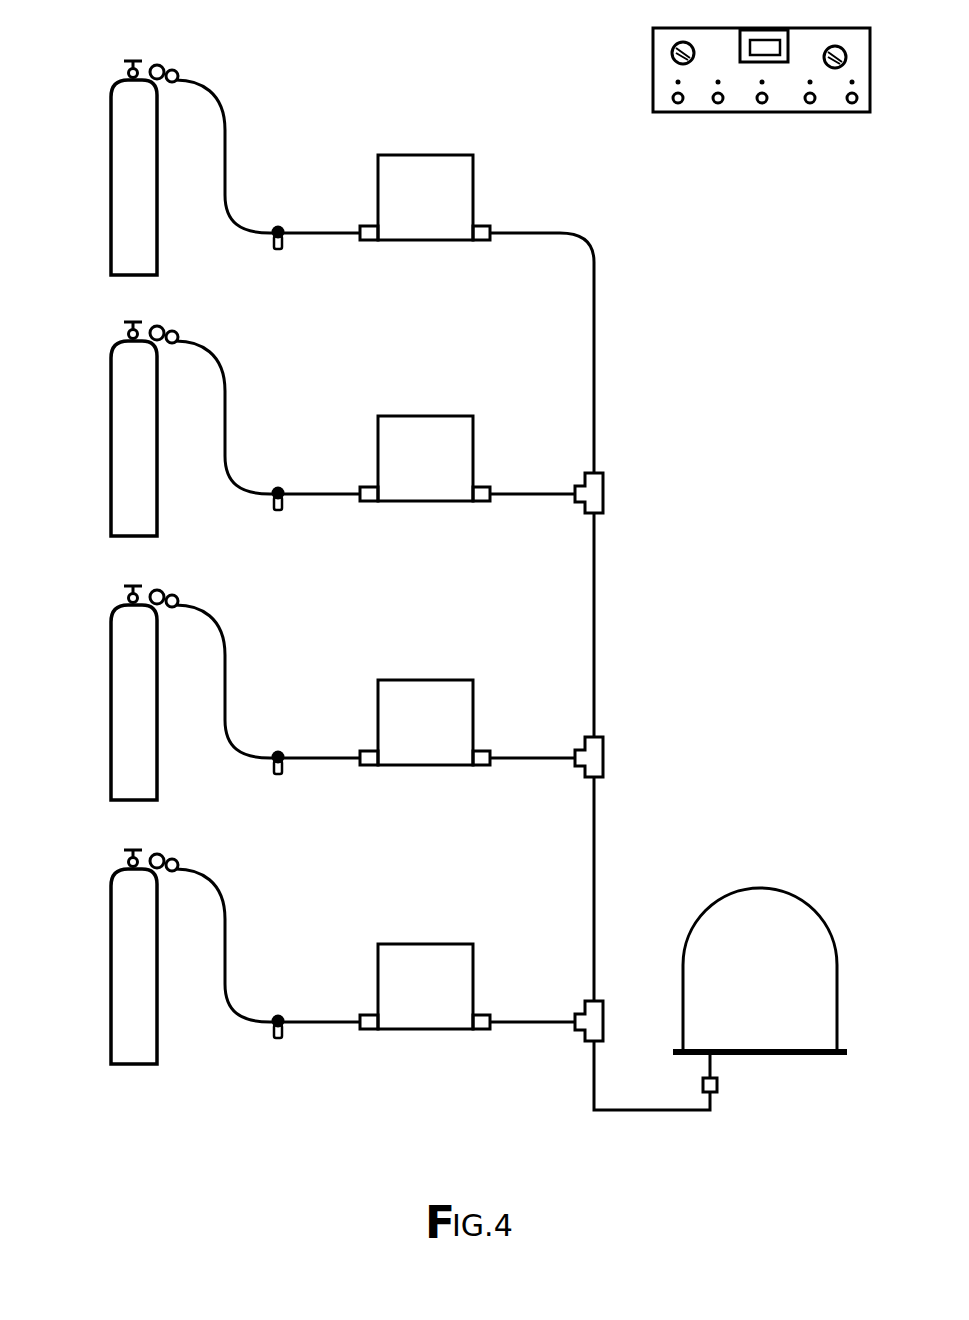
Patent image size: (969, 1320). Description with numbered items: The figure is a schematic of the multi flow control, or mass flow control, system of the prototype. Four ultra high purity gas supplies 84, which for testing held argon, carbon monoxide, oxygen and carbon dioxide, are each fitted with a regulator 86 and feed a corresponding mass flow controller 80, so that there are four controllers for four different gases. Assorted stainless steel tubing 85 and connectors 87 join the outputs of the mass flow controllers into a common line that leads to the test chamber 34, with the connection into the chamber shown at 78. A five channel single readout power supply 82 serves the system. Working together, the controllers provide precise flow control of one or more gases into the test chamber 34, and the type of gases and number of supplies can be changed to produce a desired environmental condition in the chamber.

The test chamber 34 is at (783, 942).
The gas inlet 78 is at (724, 1063).
The mass flow controller 80 is at (415, 211).
The five channel single readout power supply 82 is at (749, 95).
The ultra high purity gas supply 84 is at (133, 226).
The stainless steel tubing 85 is at (540, 740).
The regulator 86 is at (192, 66).
The connector 87 is at (597, 756).